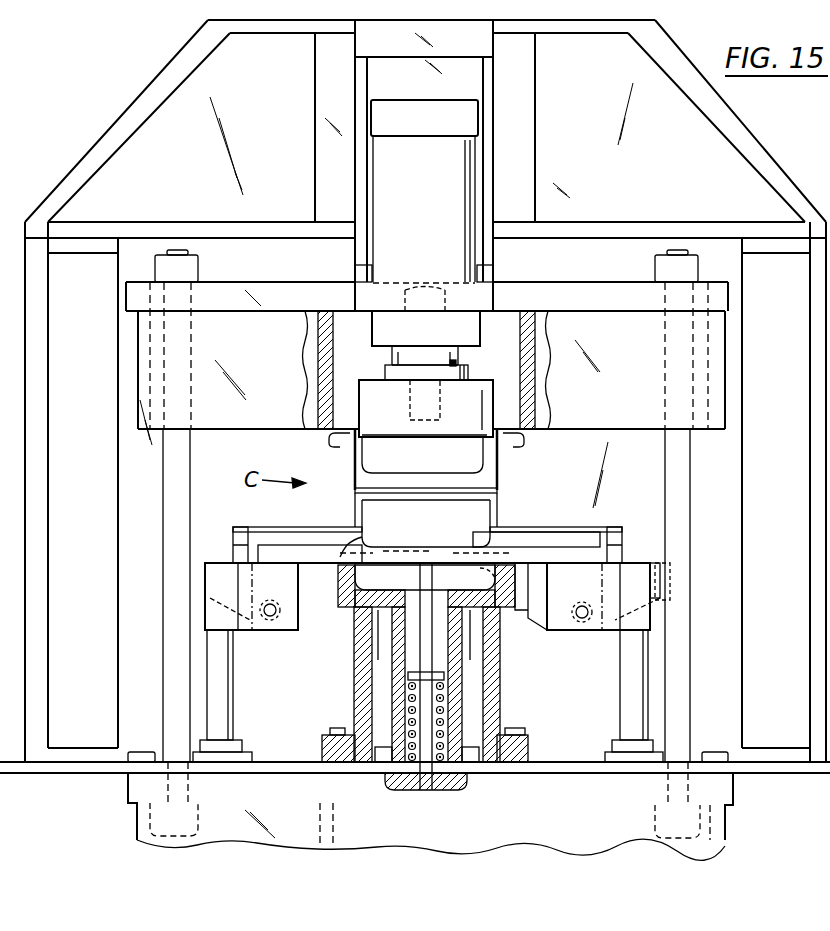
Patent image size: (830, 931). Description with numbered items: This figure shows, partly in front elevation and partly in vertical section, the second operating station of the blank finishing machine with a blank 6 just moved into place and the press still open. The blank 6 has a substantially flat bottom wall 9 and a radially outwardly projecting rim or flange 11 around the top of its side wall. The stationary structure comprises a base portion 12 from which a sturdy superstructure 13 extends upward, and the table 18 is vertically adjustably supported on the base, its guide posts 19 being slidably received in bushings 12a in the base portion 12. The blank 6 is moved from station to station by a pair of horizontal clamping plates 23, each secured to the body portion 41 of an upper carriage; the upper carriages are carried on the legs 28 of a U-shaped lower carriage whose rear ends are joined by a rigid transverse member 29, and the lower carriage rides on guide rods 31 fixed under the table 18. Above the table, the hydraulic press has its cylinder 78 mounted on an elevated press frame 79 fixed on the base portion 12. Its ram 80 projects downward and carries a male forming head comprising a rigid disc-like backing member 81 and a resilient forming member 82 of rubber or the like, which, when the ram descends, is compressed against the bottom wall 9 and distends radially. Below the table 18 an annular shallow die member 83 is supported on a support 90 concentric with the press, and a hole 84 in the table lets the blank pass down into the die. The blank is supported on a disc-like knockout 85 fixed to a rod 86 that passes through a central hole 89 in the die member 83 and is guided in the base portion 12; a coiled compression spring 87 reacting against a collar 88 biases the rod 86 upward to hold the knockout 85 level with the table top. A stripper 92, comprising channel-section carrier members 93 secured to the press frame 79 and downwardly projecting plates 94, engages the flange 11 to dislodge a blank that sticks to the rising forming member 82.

The blank 6 is at (497, 500).
The bottom wall 9 is at (362, 549).
The rim or flange 11 is at (356, 491).
The base portion 12 is at (742, 778).
The bushings 12a is at (245, 742).
The superstructure 13 is at (774, 152).
The table 18 is at (567, 545).
The guide posts 19 is at (228, 694).
The clamping plates 23 is at (278, 527).
The legs 28 is at (205, 562).
The transverse member 29 is at (546, 633).
The guide rods 31 is at (271, 617).
The body portion 41 is at (232, 538).
The cylinder 78 is at (462, 180).
The press frame 79 is at (728, 420).
The piston rod or ram 80 is at (457, 366).
The backing member 81 is at (493, 393).
The resilient forming member 82 is at (482, 458).
The die member 83 is at (358, 580).
The hole 84 is at (500, 573).
The knockout 85 is at (455, 557).
The rod 86 is at (428, 701).
The compression spring 87 is at (441, 721).
The collar 88 is at (410, 677).
The central hole 89 is at (494, 622).
The support 90 is at (392, 618).
The stripper 92 is at (340, 448).
The carrier members 93 is at (338, 438).
The plates 94 is at (350, 458).